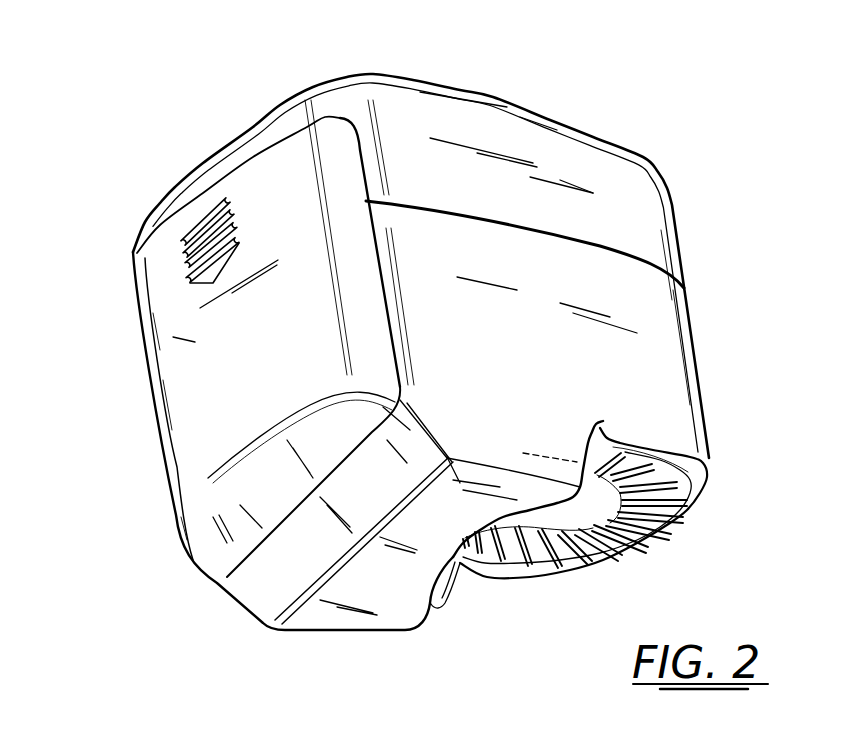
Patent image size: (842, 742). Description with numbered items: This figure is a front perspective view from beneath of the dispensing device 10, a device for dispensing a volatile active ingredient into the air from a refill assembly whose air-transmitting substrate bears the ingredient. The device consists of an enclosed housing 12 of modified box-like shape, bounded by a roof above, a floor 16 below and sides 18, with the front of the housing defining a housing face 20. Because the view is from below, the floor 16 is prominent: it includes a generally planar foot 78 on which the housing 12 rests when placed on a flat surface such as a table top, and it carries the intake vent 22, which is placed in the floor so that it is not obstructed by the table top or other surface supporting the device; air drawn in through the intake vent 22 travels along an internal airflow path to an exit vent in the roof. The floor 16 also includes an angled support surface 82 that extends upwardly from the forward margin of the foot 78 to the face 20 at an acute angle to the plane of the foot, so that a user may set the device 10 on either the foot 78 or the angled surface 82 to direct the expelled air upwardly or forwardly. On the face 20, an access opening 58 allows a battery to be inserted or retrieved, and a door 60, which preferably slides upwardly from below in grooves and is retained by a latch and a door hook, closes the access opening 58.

The dispensing device 10 is at (703, 293).
The housing 12 is at (673, 347).
The floor 16 is at (615, 457).
The sides 18 is at (613, 290).
The housing face 20 is at (193, 342).
The intake vent 22 is at (593, 565).
The access opening 58 is at (362, 152).
The door 60 is at (193, 417).
The foot 78 is at (387, 602).
The angled support surface 82 is at (267, 573).